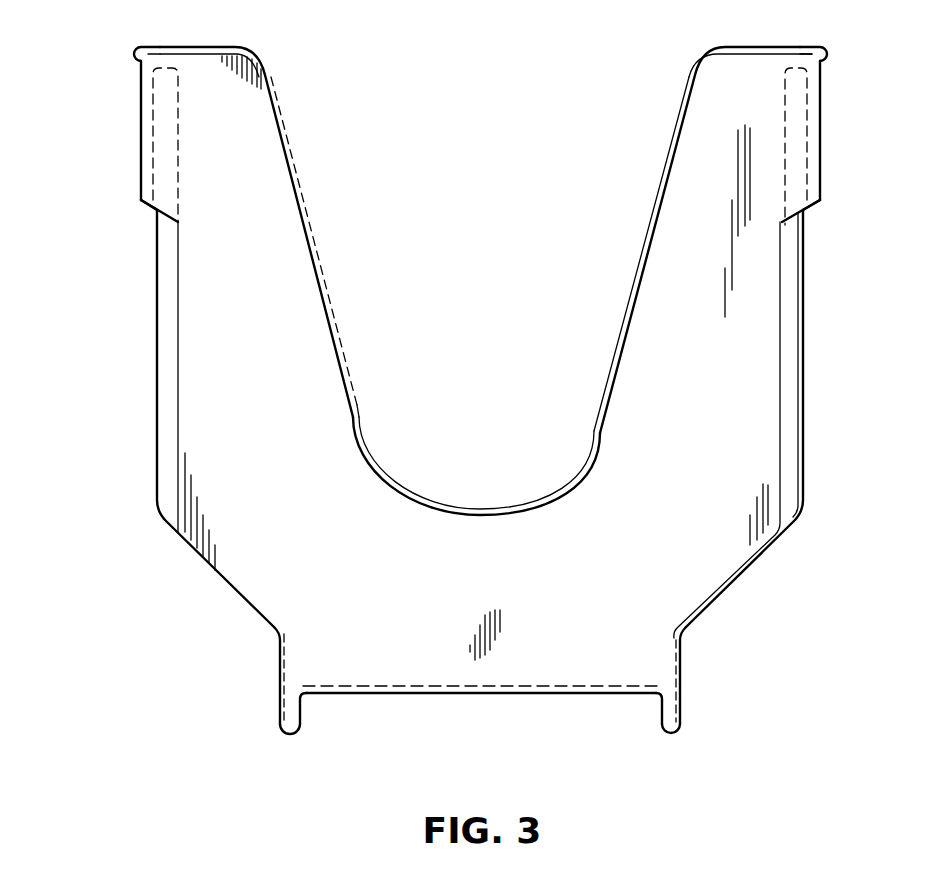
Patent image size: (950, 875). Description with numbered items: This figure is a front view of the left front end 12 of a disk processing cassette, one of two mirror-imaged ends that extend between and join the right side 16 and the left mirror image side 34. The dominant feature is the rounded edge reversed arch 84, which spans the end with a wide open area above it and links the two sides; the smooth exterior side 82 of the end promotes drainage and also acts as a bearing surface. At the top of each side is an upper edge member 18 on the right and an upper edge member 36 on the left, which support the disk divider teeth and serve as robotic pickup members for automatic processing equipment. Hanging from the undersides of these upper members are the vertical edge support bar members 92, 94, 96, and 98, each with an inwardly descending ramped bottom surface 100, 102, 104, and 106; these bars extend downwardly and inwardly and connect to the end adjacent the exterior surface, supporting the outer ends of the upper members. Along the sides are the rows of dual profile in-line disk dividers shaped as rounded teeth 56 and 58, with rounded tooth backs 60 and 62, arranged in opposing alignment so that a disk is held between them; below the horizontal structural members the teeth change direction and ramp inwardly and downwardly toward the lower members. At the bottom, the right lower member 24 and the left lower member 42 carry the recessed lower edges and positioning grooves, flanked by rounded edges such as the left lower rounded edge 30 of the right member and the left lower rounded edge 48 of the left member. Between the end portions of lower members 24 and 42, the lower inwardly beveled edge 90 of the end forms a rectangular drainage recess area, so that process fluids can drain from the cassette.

The left front end 12 is at (603, 756).
The right side 16 is at (888, 373).
The upper edge member 18 is at (826, 48).
The lower member 24 is at (683, 698).
The left lower rounded edge 30 is at (672, 745).
The left mirror image side 34 is at (88, 372).
The upper edge member 36 is at (136, 48).
The lower member 42 is at (290, 697).
The left lower rounded edge 48 is at (292, 742).
The rounded teeth 56 is at (762, 414).
The rounded teeth 58 is at (188, 402).
The rounded tooth backs 60 is at (803, 335).
The rounded tooth backs 62 is at (155, 314).
The exterior side 82 is at (495, 604).
The rounded edge reversed arch 84 is at (486, 508).
The beveled edge 90 is at (535, 696).
The vertical edge support bar member 92 is at (148, 135).
The vertical edge support bar member 94 is at (812, 140).
The vertical edge support bar member 96 is at (816, 95).
The vertical edge support bar member 98 is at (148, 92).
The inwardly descending ramped bottom surface 100 is at (142, 213).
The inwardly descending ramped bottom surface 102 is at (818, 215).
The inwardly descending ramped bottom surface 104 is at (815, 208).
The inwardly descending ramped bottom surface 106 is at (150, 207).